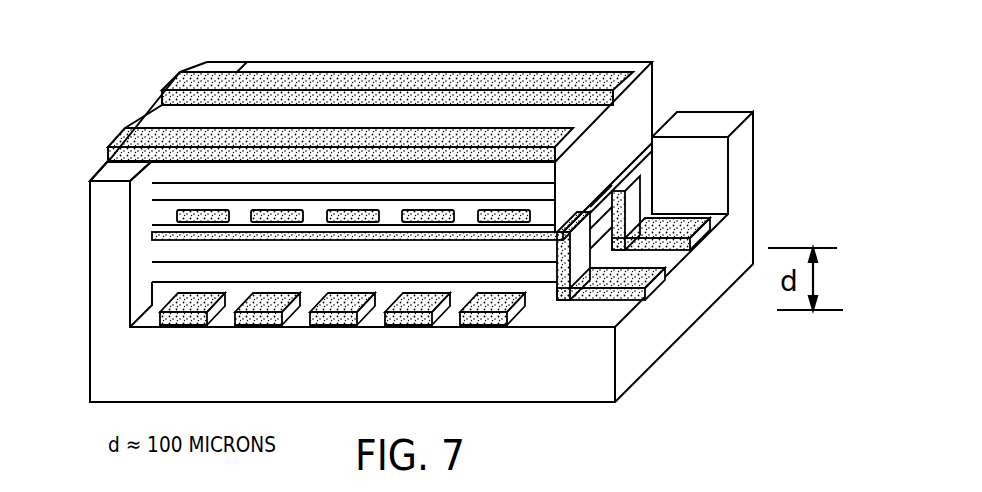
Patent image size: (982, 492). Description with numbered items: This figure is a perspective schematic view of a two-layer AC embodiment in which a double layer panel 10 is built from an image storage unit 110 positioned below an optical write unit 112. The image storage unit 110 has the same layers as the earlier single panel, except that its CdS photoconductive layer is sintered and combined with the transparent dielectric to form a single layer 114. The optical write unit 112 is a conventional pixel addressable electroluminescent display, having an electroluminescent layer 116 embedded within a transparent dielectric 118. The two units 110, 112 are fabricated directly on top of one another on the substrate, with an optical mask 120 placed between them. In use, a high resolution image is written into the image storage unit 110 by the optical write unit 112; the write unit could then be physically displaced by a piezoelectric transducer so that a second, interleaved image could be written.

The optical interconnect assembly 10 is at (358, 62).
The image storage unit 110 is at (684, 195).
The optical write unit 112 is at (674, 86).
The single layer 114 is at (640, 156).
The electroluminescent layer 116 is at (168, 188).
The transparent dielectric 118 is at (656, 84).
The optical mask 120 is at (654, 110).